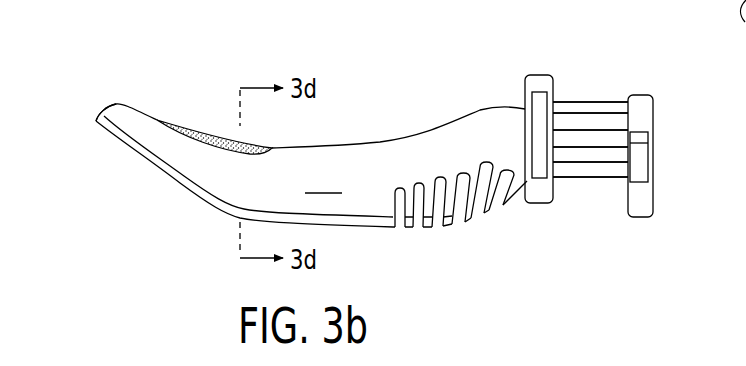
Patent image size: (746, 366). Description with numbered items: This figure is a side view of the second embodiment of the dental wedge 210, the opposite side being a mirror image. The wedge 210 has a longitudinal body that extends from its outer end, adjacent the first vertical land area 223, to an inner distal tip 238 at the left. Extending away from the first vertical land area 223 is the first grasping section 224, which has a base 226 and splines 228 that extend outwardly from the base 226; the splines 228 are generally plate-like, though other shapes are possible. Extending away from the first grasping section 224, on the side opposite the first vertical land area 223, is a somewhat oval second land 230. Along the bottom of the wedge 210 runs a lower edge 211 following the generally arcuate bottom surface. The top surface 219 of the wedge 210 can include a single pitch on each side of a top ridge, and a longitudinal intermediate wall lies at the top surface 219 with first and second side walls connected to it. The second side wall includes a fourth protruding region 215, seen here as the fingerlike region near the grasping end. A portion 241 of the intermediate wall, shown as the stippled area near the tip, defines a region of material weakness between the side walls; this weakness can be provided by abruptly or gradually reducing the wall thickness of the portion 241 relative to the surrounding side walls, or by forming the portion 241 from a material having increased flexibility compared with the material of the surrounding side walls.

The dental wedge 210 is at (392, 80).
The lower edge 211 is at (183, 181).
The fourth protruding region 215 is at (460, 232).
The top surface 219 is at (323, 180).
The first vertical land area 223 is at (539, 76).
The first grasping section 224 is at (578, 75).
The base 226 is at (592, 122).
The splines 228 is at (608, 140).
The second land 230 is at (640, 208).
The inner distal tip 238 is at (97, 119).
The portion of the intermediate wall 241 is at (189, 121).